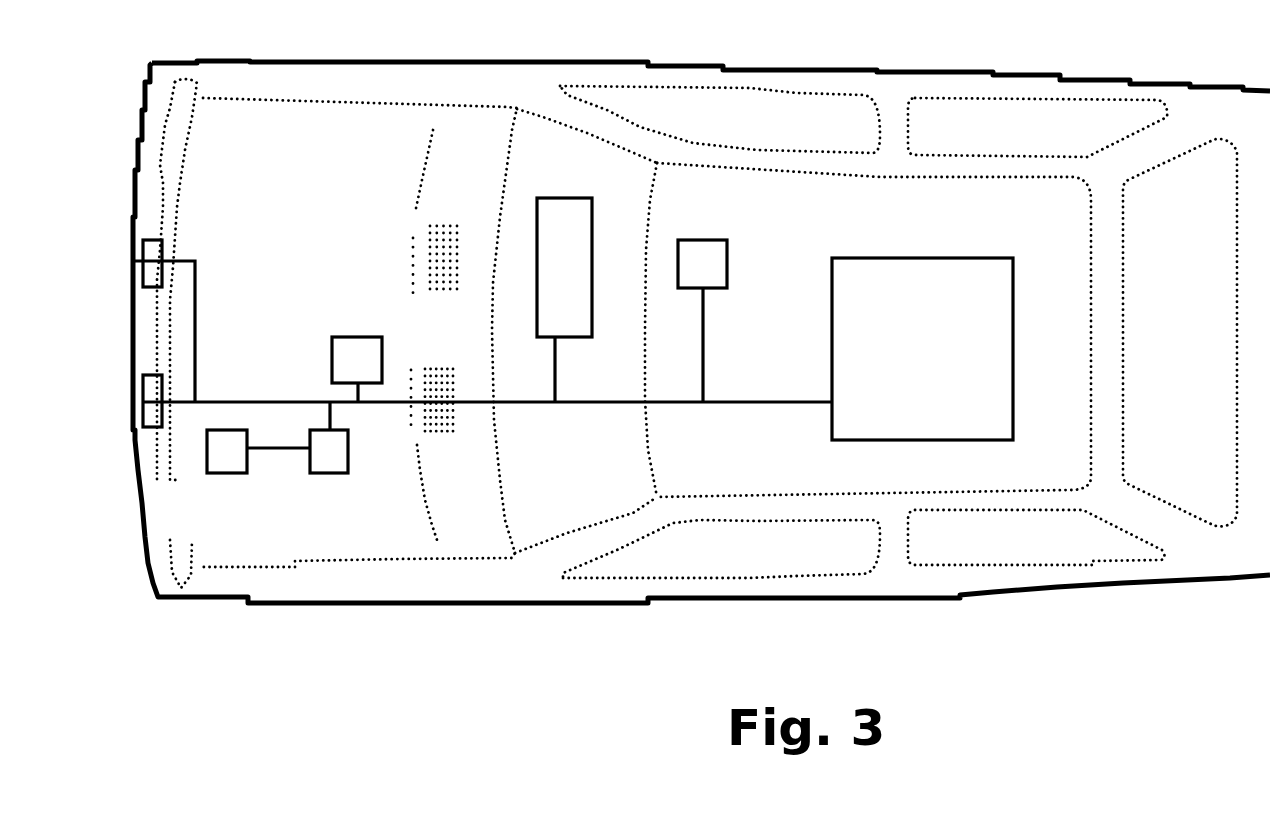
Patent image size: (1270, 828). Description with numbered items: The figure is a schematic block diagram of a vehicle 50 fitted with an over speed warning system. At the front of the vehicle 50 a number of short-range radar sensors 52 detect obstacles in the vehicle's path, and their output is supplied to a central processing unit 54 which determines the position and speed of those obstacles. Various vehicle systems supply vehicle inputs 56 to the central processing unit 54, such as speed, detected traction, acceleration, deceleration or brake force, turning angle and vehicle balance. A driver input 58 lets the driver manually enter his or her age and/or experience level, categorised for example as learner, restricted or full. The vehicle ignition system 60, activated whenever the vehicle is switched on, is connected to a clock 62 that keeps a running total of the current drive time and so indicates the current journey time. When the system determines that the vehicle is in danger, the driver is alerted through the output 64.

The vehicle 50 is at (1012, 72).
The short-range radar (SRR) sensors 52 is at (143, 261).
The central processing unit (CPU) 54 is at (950, 258).
The vehicle inputs 56 is at (344, 337).
The driver input 58 is at (727, 265).
The vehicle ignition system 60 is at (228, 473).
The clock 62 is at (338, 473).
The output 64 is at (567, 198).